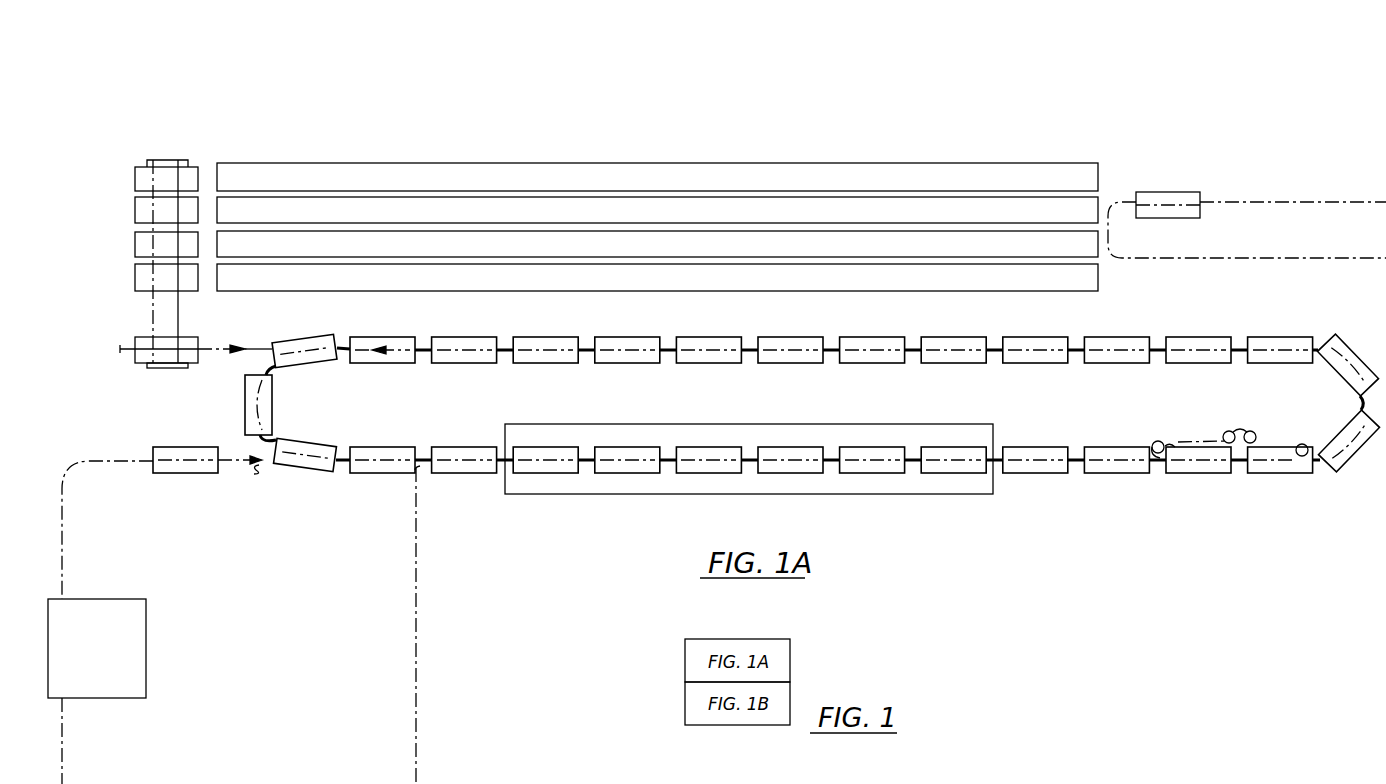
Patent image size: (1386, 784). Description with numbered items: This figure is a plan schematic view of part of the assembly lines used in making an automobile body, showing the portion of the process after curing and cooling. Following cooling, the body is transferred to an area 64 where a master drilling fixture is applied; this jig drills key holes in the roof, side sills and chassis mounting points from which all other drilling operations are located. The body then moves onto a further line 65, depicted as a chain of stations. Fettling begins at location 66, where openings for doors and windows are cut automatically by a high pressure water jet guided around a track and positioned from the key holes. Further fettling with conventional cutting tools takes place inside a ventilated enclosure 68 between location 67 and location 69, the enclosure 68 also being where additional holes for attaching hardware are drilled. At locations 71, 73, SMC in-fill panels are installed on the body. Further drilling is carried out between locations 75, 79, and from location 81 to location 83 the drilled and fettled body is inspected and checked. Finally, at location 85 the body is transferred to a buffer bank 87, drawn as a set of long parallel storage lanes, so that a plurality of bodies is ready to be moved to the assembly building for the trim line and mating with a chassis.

The master drilling fixture area 64 is at (103, 612).
The further line 65 is at (866, 374).
The water jet cutting location 66 is at (308, 470).
The fettling start location 67 is at (563, 473).
The ventilated enclosure 68 is at (188, 477).
The fettling end location 69 is at (953, 473).
The in-fill panel installation location 71 is at (1035, 473).
The in-fill panel installation location 73 is at (1363, 445).
The further drilling start location 75 is at (1348, 335).
The further drilling end location 79 is at (950, 336).
The inspection start location 81 is at (868, 336).
The inspection end location 83 is at (474, 337).
The transfer location 85 is at (315, 334).
The buffer bank 87 is at (573, 163).